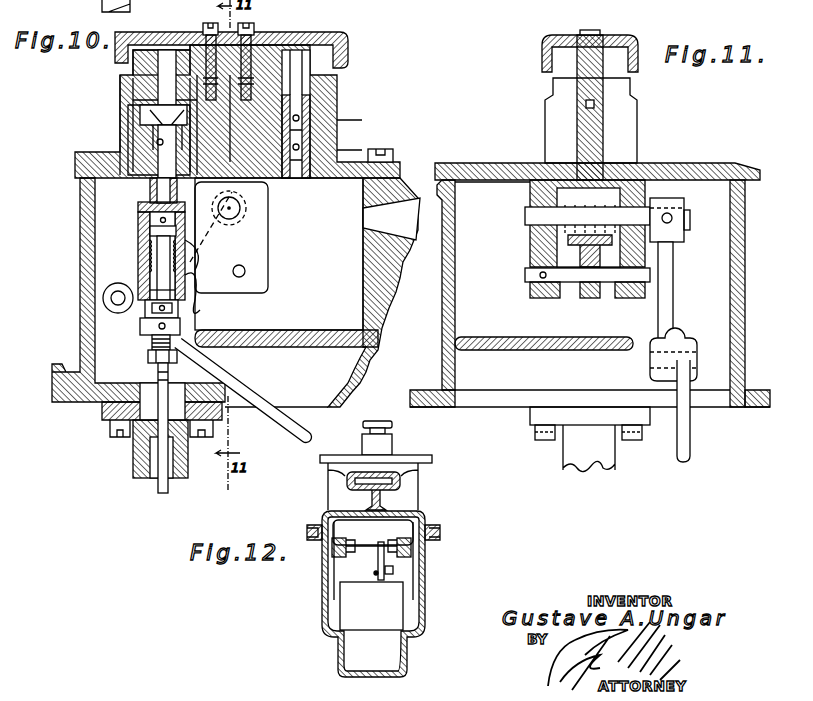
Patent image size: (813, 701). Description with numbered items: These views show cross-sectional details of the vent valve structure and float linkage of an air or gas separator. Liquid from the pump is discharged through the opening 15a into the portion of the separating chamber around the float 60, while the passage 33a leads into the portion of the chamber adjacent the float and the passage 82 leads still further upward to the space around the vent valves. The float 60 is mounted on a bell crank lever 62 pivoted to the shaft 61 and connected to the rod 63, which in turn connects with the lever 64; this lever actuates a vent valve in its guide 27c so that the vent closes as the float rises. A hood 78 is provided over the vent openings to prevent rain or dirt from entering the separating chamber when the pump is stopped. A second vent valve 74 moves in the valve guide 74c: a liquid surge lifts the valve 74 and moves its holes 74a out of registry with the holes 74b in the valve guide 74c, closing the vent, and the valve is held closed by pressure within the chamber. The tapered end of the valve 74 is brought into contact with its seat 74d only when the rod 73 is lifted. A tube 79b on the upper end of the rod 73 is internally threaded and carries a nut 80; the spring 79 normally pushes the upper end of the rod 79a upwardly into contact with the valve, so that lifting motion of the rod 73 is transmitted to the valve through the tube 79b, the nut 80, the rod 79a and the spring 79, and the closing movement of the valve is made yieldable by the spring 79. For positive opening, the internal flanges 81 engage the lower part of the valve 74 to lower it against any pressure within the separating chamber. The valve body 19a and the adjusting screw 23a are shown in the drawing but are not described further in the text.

In FIG. 10, the vent valve 74 is at (128, 160).
In FIG. 10, the holes in the valve 74a is at (118, 128).
In FIG. 10, the holes in the valve guide 74b is at (133, 110).
In FIG. 10, the valve guide 74c is at (145, 90).
In FIG. 10, the valve seat 74d is at (166, 60).
In FIG. 10, the hood 78 is at (341, 42).
In FIG. 11, the hood 78 is at (616, 47).
In FIG. 12, the hood 78 is at (378, 420).
In FIG. 10, the valve body 19a is at (339, 126).
In FIG. 11, the valve body 19a is at (633, 108).
In FIG. 12, the valve body 19a is at (392, 447).
In FIG. 10, the guide 27c is at (316, 180).
In FIG. 10, the internal flanges 81 is at (150, 212).
In FIG. 10, the lever 64 is at (190, 232).
In FIG. 11, the lever 64 is at (674, 285).
In FIG. 10, the passage 33a is at (380, 213).
In FIG. 10, the nut 80 is at (152, 288).
In FIG. 10, the spring 79 is at (195, 275).
In FIG. 10, the rod 79a is at (165, 240).
In FIG. 10, the tube 79b is at (200, 308).
In FIG. 10, the rod 63 is at (243, 391).
In FIG. 11, the rod 63 is at (690, 434).
In FIG. 12, the rod 63 is at (397, 562).
In FIG. 10, the rod 73 is at (162, 461).
In FIG. 11, the adjusting screw 23a is at (607, 188).
In FIG. 12, the passage 82 is at (392, 488).
In FIG. 12, the shaft 61 is at (371, 548).
In FIG. 12, the bell crank lever 62 is at (393, 570).
In FIG. 12, the float 60 is at (362, 612).
In FIG. 12, the opening 15a is at (370, 655).